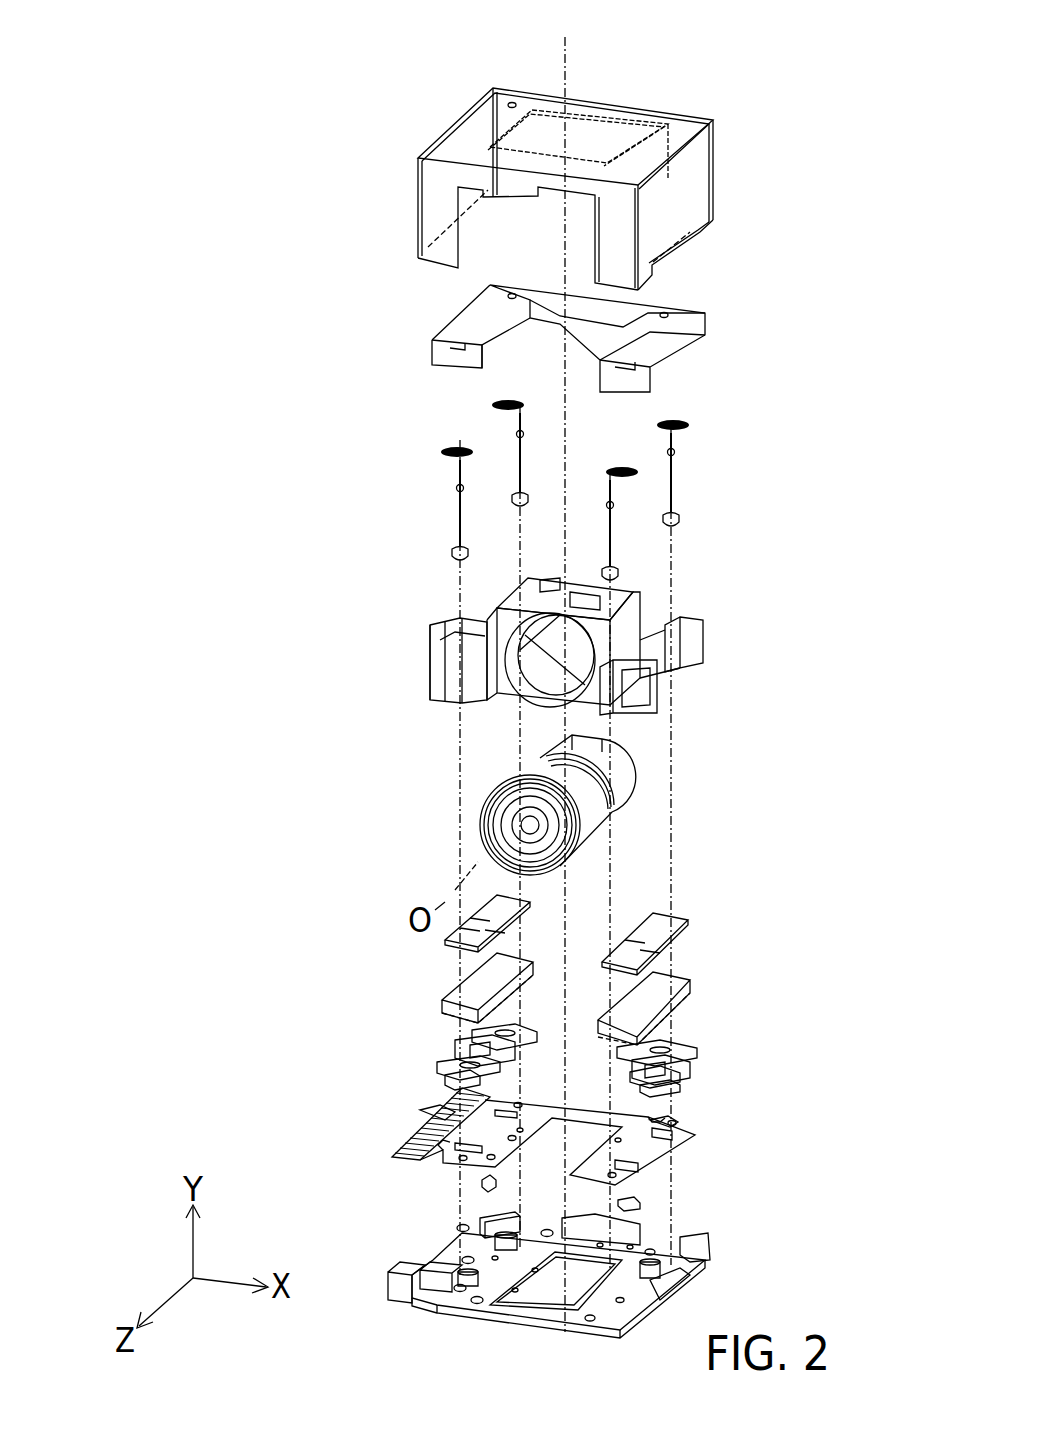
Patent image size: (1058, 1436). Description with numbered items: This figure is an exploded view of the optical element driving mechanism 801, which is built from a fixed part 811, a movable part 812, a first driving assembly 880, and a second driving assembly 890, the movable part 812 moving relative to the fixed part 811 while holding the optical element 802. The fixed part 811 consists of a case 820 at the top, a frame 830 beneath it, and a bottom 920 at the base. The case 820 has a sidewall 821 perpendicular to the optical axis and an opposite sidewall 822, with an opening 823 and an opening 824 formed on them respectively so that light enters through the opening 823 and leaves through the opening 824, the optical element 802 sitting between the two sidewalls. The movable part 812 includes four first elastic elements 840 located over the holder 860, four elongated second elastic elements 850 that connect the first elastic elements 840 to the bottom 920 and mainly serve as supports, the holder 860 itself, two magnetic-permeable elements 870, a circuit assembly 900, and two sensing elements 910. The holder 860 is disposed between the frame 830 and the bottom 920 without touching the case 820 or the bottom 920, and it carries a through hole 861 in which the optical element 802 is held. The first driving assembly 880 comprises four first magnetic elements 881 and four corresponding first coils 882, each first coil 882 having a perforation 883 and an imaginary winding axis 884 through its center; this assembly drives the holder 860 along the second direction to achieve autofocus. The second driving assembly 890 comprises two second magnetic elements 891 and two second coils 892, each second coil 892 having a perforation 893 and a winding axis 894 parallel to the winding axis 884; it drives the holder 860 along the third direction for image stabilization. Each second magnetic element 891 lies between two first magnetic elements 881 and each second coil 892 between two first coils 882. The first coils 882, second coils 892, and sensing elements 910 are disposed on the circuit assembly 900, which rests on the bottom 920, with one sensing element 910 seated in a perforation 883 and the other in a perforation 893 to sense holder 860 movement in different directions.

The optical element driving mechanism 801 is at (315, 30).
The optical element 802 is at (483, 818).
The fixed part 811 is at (192, 322).
The movable part 812 is at (192, 453).
The case 820 is at (760, 200).
The sidewall 821 is at (438, 197).
The sidewall 822 is at (687, 168).
The opening 823 is at (505, 234).
The opening 824 is at (642, 150).
The frame 830 is at (760, 293).
The first elastic element 840 is at (760, 430).
The second elastic element 850 is at (760, 495).
The holder 860 is at (758, 605).
The through hole 861 is at (500, 705).
The magnetic-permeable element 870 is at (760, 890).
The first driving assembly 880 is at (192, 675).
The first magnetic element 881 is at (760, 975).
The first coil 882 is at (760, 1110).
The perforation 883 is at (690, 1050).
The winding axis 884 is at (700, 1125).
The second driving assembly 890 is at (192, 772).
The second magnetic element 891 is at (760, 950).
The second coil 892 is at (760, 1055).
The perforation 893 is at (455, 1062).
The winding axis 894 is at (420, 1115).
The circuit assembly 900 is at (760, 1165).
The sensing element 910 is at (760, 1199).
The bottom 920 is at (760, 1272).